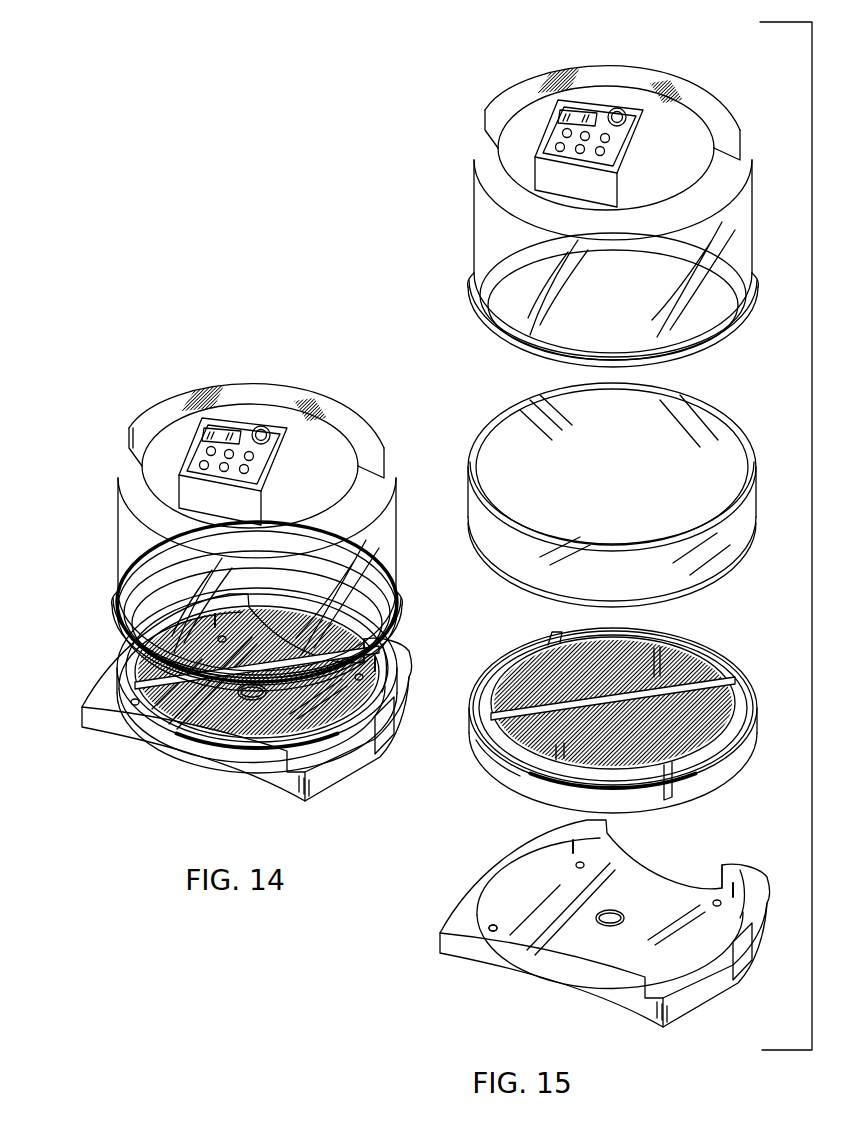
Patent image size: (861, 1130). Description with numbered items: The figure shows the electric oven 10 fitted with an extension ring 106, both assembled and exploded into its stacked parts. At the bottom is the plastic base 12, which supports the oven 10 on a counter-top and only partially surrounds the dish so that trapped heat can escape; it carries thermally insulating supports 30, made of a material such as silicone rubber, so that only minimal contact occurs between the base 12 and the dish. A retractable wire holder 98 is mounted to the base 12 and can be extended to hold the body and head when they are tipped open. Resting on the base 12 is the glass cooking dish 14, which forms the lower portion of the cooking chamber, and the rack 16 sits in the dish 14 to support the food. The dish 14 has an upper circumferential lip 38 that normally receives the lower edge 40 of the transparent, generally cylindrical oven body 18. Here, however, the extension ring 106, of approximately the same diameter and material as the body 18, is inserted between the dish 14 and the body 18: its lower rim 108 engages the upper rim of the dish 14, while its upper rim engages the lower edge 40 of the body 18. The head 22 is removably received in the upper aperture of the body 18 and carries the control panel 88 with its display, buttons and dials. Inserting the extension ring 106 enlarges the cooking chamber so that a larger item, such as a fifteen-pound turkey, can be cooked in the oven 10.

In FIG. 14, the oven 10 is at (105, 407).
In FIG. 15, the oven 10 is at (812, 427).
In FIG. 14, the base 12 is at (83, 731).
In FIG. 15, the base 12 is at (436, 948).
In FIG. 14, the glass cooking dish 14 is at (213, 772).
In FIG. 15, the glass cooking dish 14 is at (707, 787).
In FIG. 14, the rack 16 is at (238, 717).
In FIG. 15, the rack 16 is at (693, 720).
In FIG. 14, the oven body 18 is at (127, 543).
In FIG. 15, the oven body 18 is at (740, 220).
In FIG. 14, the head 22 is at (357, 422).
In FIG. 15, the head 22 is at (528, 82).
In FIG. 15, the supports 30 is at (494, 932).
In FIG. 15, the upper circumferential lip 38 is at (493, 767).
In FIG. 15, the lower edge 40 is at (483, 316).
In FIG. 15, the control panel 88 is at (543, 148).
In FIG. 14, the holder 98 is at (397, 723).
In FIG. 15, the holder 98 is at (755, 948).
In FIG. 14, the extension ring 106 is at (115, 640).
In FIG. 15, the extension ring 106 is at (740, 533).
In FIG. 15, the lower rim 108 is at (482, 557).